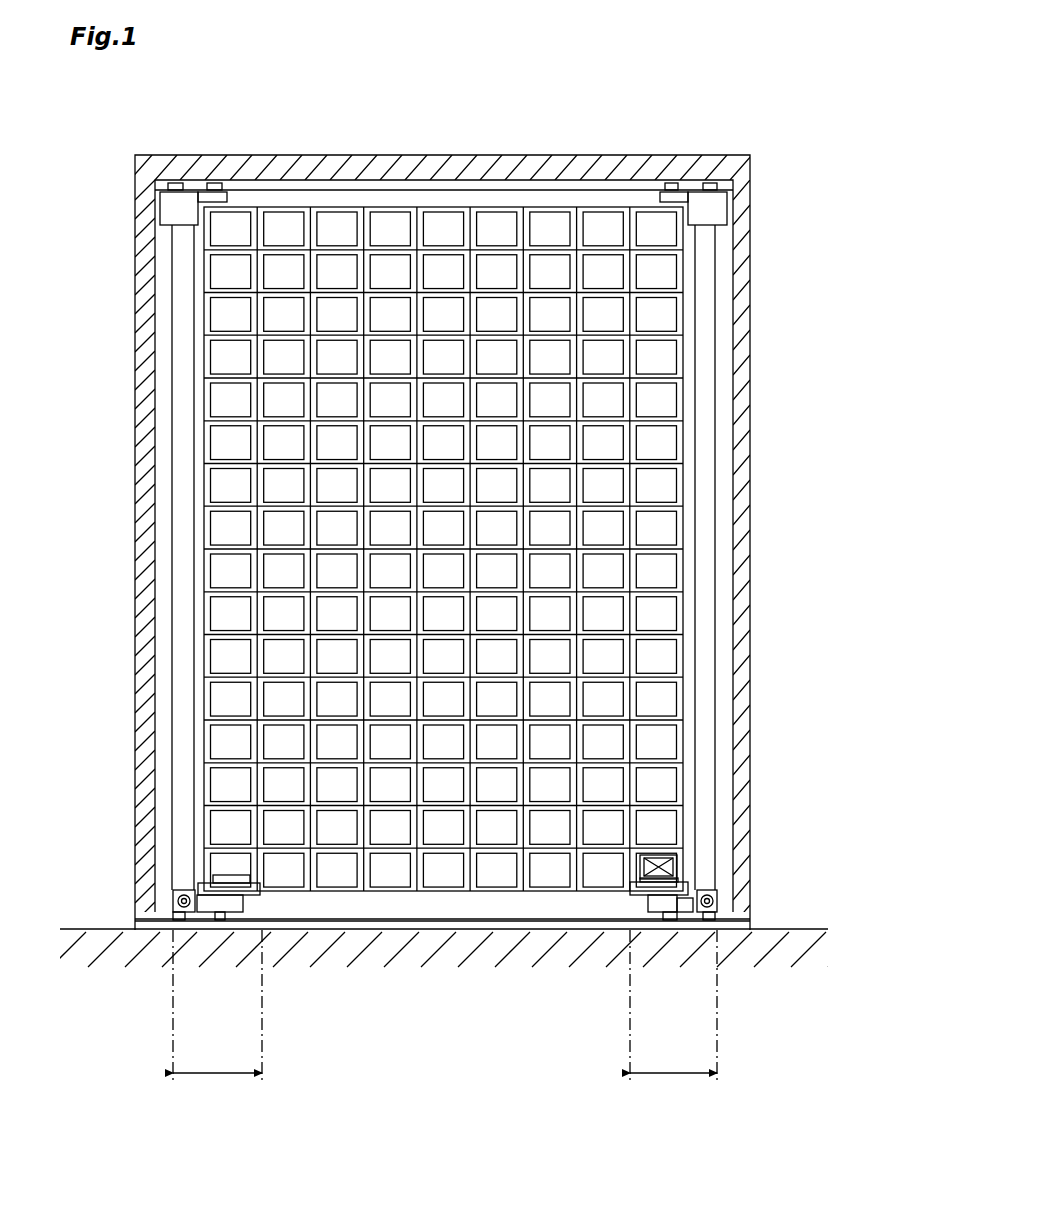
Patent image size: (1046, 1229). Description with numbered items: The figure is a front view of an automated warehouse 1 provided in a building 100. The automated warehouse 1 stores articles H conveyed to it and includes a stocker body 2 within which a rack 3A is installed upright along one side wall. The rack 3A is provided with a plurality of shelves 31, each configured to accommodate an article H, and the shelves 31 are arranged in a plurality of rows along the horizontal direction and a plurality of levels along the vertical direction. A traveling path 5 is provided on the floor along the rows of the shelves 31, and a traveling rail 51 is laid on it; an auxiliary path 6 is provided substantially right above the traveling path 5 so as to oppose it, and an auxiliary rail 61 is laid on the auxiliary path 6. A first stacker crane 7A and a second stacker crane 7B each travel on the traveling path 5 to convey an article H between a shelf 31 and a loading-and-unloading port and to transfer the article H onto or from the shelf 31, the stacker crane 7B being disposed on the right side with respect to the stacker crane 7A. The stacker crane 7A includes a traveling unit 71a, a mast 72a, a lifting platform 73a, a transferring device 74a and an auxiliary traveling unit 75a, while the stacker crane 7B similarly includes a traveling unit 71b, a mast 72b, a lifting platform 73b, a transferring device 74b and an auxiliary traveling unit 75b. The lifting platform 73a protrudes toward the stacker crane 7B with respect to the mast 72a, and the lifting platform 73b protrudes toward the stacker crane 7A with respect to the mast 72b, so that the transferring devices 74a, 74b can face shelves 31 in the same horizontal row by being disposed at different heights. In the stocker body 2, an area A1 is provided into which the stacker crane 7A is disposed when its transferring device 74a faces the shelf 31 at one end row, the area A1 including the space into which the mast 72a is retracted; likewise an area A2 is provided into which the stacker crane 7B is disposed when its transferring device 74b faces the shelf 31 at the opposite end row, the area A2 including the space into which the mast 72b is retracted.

The building 100 is at (772, 104).
The automated warehouse 1 is at (540, 139).
The stocker body 2 is at (695, 165).
The rack 3A is at (608, 207).
The shelves 31 is at (663, 397).
The traveling path 5 is at (428, 934).
The traveling rail 51 is at (510, 921).
The auxiliary path 6 is at (459, 177).
The auxiliary rail 61 is at (393, 188).
The mast 72a is at (183, 653).
The mast 72b is at (705, 658).
The auxiliary traveling unit 75a is at (159, 212).
The auxiliary traveling unit 75b is at (729, 207).
The stacker crane 7A is at (169, 876).
The stacker crane 7B is at (707, 880).
The lifting platform 73a is at (225, 890).
The lifting platform 73b is at (645, 890).
The transferring device 74a is at (234, 878).
The transferring device 74b is at (662, 880).
The traveling unit 71a is at (236, 919).
The traveling unit 71b is at (653, 918).
The article H is at (662, 858).
The area A1 is at (217, 1006).
The area A2 is at (673, 1006).